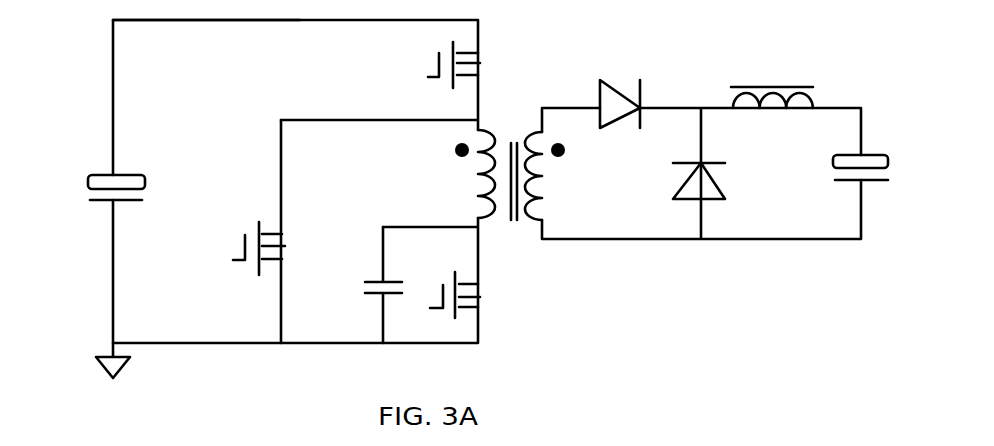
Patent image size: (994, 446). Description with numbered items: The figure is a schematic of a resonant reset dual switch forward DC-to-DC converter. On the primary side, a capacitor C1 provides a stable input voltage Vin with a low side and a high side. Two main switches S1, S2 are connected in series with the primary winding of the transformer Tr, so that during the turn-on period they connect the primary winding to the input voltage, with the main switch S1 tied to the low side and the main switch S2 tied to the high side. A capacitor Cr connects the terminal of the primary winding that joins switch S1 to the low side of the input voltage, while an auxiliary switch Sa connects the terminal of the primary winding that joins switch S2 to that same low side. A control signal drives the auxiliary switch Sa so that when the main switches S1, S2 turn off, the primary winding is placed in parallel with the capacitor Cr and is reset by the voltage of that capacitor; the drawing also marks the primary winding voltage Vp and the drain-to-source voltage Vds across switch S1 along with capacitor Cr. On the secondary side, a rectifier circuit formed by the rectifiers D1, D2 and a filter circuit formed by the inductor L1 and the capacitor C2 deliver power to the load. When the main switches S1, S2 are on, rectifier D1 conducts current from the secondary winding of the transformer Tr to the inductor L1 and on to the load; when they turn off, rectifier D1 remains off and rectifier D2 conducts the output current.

The input voltage Vin is at (206, 38).
The capacitor C1 is at (87, 193).
The auxiliary switch Sa is at (239, 231).
The capacitor Cr is at (372, 280).
The main switch S1 is at (444, 285).
The main switch S2 is at (435, 64).
The primary winding voltage Vp is at (423, 147).
The drain-source voltage of main switch Vds is at (500, 232).
The transformer Tr is at (525, 175).
The rectifier D1 is at (616, 86).
The rectifier D2 is at (727, 162).
The inductor L1 is at (772, 80).
The capacitor C2 is at (872, 147).